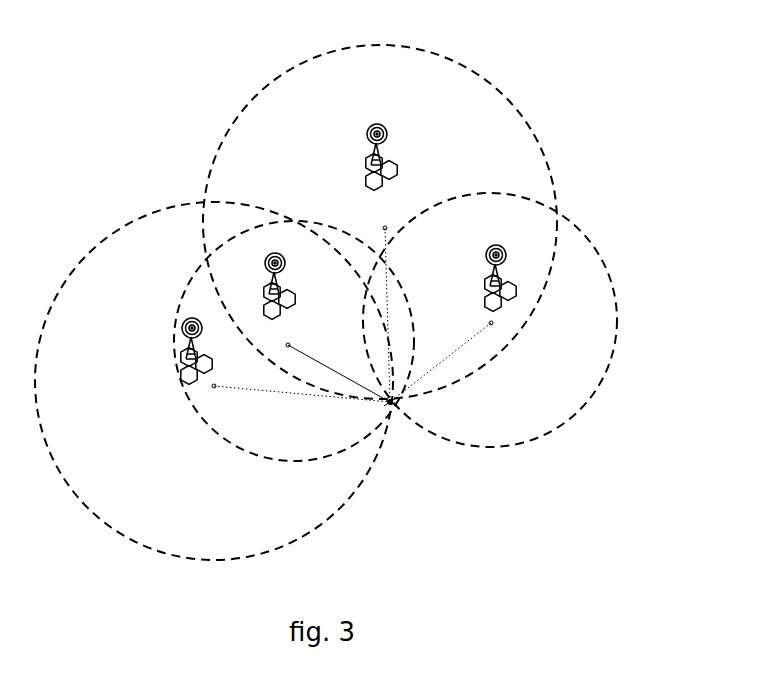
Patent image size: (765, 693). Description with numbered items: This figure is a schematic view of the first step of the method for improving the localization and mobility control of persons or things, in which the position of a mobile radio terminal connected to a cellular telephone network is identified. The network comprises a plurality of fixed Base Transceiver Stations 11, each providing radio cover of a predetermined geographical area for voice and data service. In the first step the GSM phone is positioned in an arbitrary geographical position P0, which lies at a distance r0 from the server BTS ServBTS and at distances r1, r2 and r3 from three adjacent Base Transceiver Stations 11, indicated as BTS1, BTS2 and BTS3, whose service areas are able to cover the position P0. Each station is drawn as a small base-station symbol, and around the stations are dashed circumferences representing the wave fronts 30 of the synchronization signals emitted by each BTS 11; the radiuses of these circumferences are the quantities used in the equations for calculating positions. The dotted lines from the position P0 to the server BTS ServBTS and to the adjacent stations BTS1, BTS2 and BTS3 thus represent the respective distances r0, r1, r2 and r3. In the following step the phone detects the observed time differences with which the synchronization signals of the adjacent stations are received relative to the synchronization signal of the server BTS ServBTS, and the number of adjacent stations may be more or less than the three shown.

The wave fronts 30 is at (490, 80).
The Base Transceiver Station 11 is at (395, 162).
The arbitrary geographical position P0 is at (390, 419).
The first adjacent BTS BTS1 is at (175, 408).
The second adjacent BTS BTS2 is at (386, 215).
The third adjacent BTS BTS3 is at (530, 322).
The server BTS ServBTS is at (284, 332).
The distance from the server BTS r0 is at (339, 372).
The distance from BTS1 r1 is at (302, 408).
The distance from BTS2 r2 is at (401, 315).
The distance from BTS3 r3 is at (440, 362).